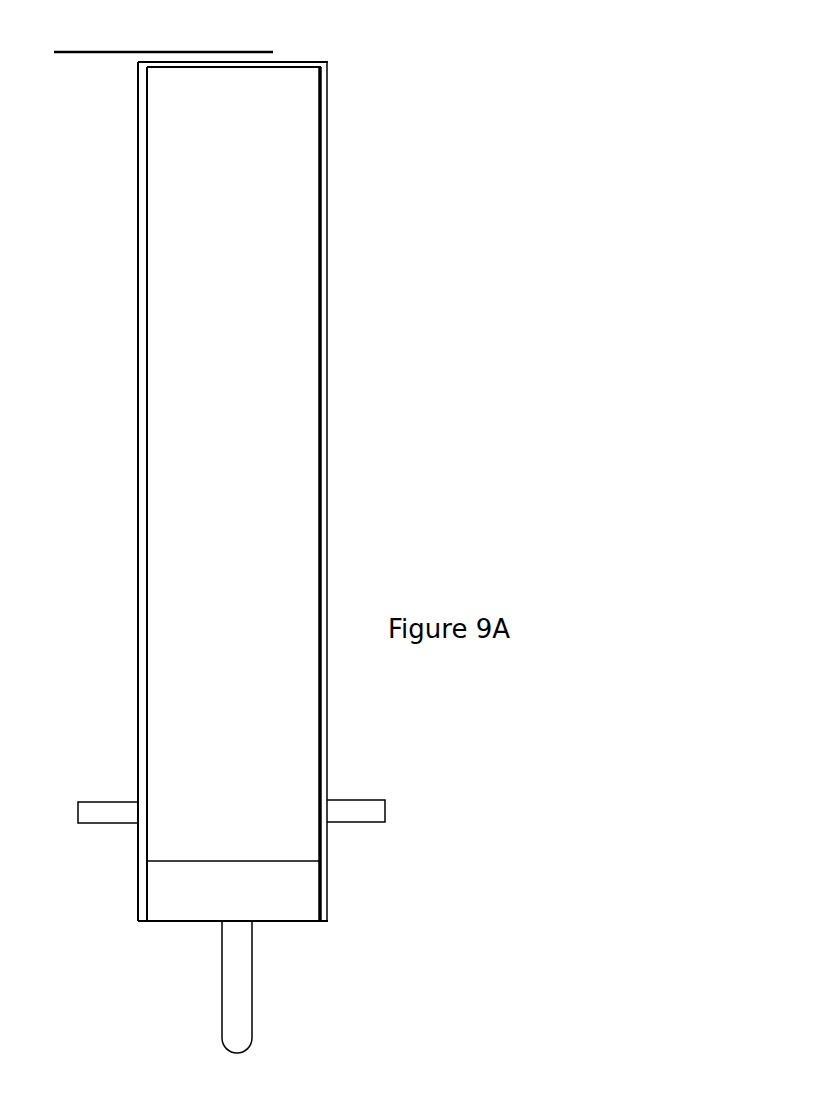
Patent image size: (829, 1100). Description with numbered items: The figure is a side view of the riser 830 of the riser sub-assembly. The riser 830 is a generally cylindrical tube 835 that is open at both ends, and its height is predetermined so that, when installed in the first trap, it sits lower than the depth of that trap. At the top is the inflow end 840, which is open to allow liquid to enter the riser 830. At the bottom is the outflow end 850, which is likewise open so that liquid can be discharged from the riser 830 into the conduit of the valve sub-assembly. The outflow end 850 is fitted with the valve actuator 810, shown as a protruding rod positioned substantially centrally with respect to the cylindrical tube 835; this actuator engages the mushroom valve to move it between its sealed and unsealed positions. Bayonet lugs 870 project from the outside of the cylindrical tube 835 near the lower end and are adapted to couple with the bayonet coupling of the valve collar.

The inflow end 840 is at (240, 60).
The riser 830 is at (292, 143).
The cylindrical tube 835 is at (327, 254).
The outflow end 850 is at (300, 914).
The bayonet lugs 870 is at (384, 807).
The valve actuator 810 is at (247, 1000).